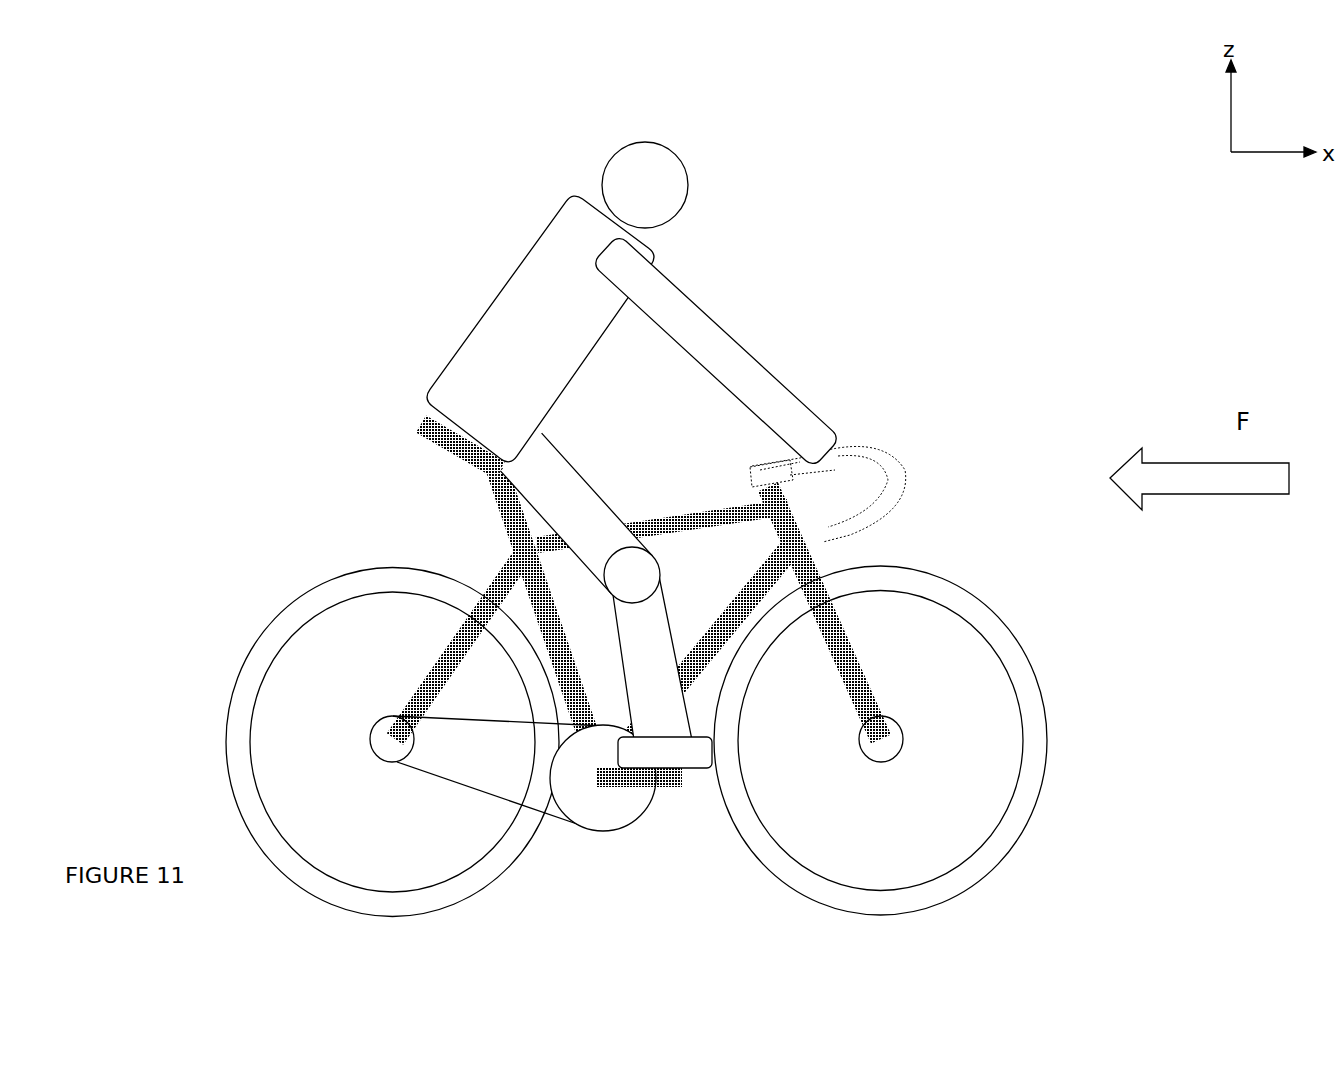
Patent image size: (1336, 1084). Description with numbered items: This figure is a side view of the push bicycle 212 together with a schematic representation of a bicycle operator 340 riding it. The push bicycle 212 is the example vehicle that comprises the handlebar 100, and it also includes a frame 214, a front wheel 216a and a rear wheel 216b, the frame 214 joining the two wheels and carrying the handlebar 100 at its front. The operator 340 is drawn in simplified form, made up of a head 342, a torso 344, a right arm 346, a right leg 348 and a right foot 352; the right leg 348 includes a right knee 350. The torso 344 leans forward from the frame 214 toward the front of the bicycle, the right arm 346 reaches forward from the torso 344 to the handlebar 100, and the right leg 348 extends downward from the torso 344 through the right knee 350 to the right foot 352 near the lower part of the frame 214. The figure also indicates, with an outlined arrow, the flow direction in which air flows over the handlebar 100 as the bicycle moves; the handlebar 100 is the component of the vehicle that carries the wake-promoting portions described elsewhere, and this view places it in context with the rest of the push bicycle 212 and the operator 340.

The handlebar 100 is at (905, 433).
The push bicycle 212 is at (1152, 695).
The frame 214 is at (488, 519).
The front wheel 216a is at (1022, 826).
The rear wheel 216b is at (267, 850).
The bicycle operator 340 is at (683, 146).
The head 342 is at (667, 194).
The torso 344 is at (517, 300).
The right arm 346 is at (695, 325).
The right leg 348 is at (598, 618).
The right knee 350 is at (640, 582).
The right foot 352 is at (664, 757).